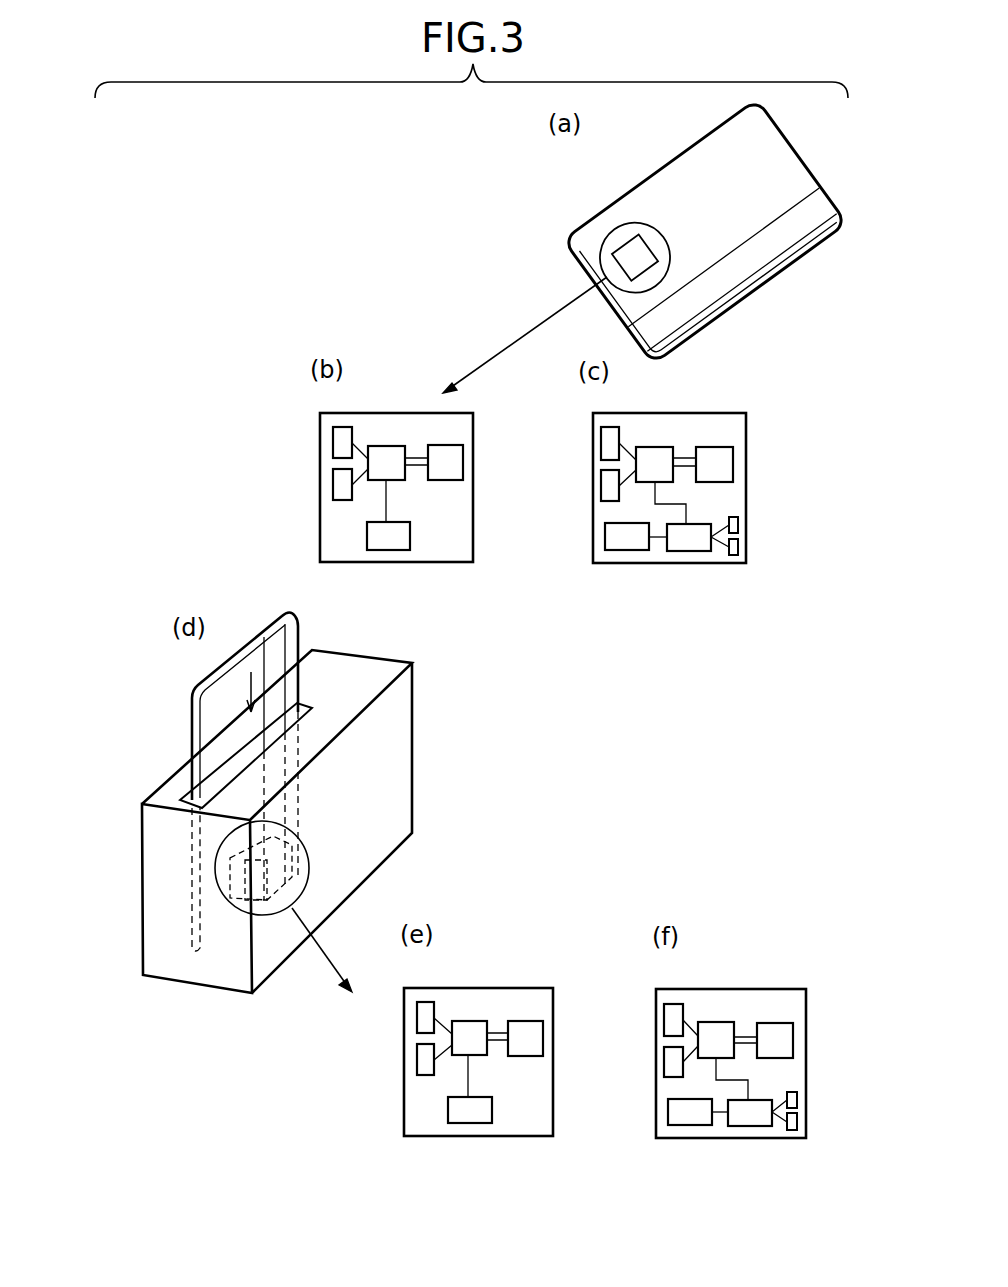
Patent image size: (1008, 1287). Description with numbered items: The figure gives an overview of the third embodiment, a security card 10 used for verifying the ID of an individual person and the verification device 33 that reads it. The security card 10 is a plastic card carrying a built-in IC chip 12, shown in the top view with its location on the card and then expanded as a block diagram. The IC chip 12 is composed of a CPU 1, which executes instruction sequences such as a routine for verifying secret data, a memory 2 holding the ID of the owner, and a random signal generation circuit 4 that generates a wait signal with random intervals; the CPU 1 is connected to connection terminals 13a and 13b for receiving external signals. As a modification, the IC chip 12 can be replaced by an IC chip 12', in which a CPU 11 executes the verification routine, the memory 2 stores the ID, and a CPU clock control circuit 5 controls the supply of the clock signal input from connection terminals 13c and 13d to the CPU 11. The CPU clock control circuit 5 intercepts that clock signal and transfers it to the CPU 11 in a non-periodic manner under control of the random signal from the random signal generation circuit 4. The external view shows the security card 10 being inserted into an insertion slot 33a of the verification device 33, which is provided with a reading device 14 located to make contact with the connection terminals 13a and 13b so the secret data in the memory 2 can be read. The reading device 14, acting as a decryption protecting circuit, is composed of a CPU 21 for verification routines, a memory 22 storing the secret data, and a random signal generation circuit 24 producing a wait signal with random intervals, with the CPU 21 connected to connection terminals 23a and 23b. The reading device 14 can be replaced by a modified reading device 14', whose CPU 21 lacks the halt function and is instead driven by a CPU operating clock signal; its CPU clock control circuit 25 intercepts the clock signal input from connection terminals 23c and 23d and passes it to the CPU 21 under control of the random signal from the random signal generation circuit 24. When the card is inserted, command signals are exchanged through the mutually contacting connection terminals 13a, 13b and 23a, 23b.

The security card 10 is at (783, 156).
The IC chip 12 is at (399, 612).
The IC chip 12' is at (698, 477).
The CPU 1 is at (388, 446).
The memory 2 is at (465, 463).
The random signal generation circuit 4 is at (382, 550).
The CPU clock control circuit 5 is at (683, 552).
The CPU 11 is at (656, 447).
The connection terminal 13a is at (333, 440).
The connection terminal 13b is at (333, 485).
The connection terminal 13c is at (738, 525).
The connection terminal 13d is at (738, 547).
The verification device 33 is at (395, 737).
The insertion slot 33a is at (303, 708).
The reading device 14 is at (409, 978).
The reading device 14' is at (758, 1051).
The CPU 21 is at (473, 1020).
The memory 22 is at (545, 1038).
The connection terminal 23a is at (417, 1018).
The connection terminal 23b is at (417, 1062).
The connection terminal 23c is at (797, 1101).
The connection terminal 23d is at (797, 1122).
The random signal generation circuit 24 is at (467, 1125).
The CPU clock control circuit 25 is at (747, 1127).